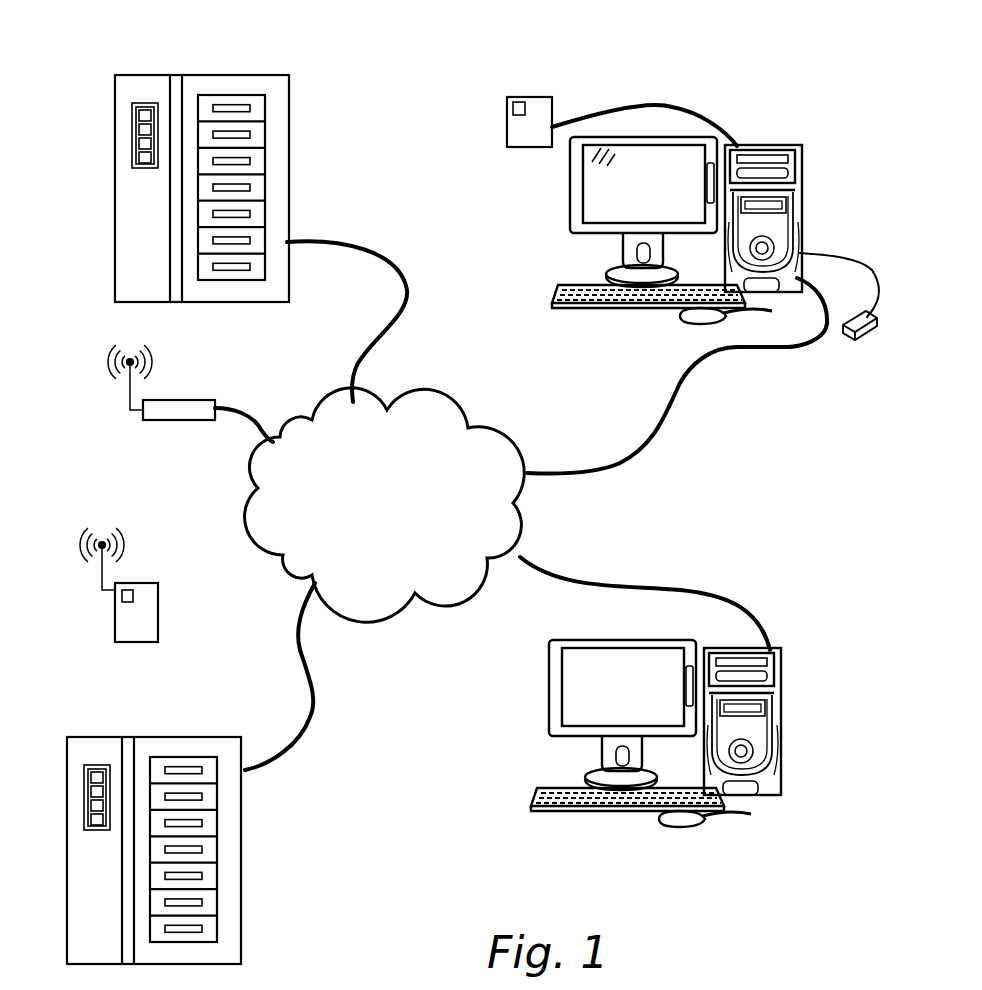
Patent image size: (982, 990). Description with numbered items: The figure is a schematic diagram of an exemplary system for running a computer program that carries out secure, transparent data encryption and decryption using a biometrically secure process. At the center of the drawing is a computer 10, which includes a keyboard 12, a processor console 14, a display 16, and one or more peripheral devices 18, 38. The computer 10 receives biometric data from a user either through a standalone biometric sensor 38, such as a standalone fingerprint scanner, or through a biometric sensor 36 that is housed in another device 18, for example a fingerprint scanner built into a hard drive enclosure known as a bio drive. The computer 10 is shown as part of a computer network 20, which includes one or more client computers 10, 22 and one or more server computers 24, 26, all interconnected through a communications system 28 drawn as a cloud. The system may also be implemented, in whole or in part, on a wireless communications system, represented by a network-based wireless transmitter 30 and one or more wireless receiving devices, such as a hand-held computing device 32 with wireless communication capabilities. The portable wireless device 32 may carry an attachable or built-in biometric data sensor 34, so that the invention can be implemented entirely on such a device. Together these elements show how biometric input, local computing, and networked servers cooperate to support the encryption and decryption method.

The computer 10 is at (680, 202).
The keyboard 12 is at (627, 313).
The processor console 14 is at (803, 172).
The display 16 is at (570, 197).
The peripheral device 18 is at (502, 92).
The computer network 20 is at (677, 510).
The client computer 22 is at (780, 688).
The server computer 24 is at (207, 75).
The server computer 26 is at (238, 867).
The communications system 28 is at (438, 590).
The network-based wireless transmitter 30 is at (182, 400).
The hand-held computing device 32 is at (146, 597).
The biometric data sensor 34 is at (135, 593).
The biometric sensor 36 is at (522, 103).
The standalone biometric sensor 38 is at (865, 340).